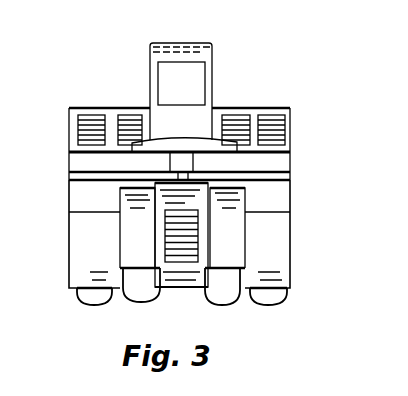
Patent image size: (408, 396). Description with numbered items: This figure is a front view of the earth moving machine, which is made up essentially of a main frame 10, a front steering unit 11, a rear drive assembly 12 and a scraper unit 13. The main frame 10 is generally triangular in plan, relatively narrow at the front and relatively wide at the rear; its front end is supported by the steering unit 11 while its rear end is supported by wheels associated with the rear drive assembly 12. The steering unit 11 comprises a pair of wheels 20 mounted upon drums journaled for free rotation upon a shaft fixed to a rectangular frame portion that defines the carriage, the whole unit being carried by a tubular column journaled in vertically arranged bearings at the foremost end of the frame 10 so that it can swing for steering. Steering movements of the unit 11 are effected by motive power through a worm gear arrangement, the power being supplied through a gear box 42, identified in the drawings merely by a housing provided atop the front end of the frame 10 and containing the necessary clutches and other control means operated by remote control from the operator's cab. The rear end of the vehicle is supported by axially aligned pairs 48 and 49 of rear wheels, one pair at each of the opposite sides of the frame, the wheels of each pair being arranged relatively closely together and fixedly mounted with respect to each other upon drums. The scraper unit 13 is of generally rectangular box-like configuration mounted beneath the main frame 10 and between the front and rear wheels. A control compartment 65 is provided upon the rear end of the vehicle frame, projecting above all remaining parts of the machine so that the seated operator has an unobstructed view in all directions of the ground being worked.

The main frame 10 is at (287, 162).
The front steering unit 11 is at (235, 234).
The rear drive assembly 12 is at (94, 110).
The scraper unit 13 is at (283, 238).
The wheels 20 is at (210, 292).
The gear box 42 is at (188, 140).
The pair of rear wheels 48 is at (287, 300).
The pair of rear wheels 49 is at (80, 304).
The control compartment 65 is at (212, 63).